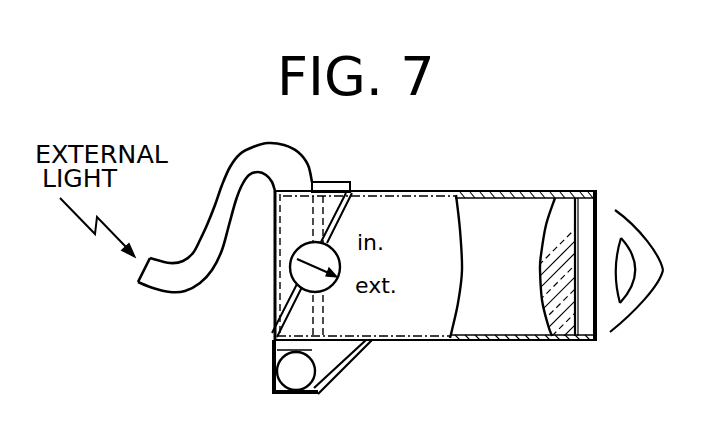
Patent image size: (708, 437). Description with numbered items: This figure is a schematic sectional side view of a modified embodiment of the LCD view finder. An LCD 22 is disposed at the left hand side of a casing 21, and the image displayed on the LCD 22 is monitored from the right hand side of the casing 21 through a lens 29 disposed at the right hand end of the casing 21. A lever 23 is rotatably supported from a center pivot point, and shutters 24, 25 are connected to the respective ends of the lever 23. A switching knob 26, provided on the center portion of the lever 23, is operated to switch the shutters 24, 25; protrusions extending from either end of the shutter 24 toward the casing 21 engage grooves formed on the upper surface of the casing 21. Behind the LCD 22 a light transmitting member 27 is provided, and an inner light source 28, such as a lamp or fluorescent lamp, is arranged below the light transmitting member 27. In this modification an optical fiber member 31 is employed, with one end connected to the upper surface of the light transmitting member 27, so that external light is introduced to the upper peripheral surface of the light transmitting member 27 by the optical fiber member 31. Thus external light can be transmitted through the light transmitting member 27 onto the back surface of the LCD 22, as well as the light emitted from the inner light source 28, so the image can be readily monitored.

The casing 21 is at (488, 192).
The LCD 22 is at (322, 310).
The lever 23 is at (349, 207).
The shutter 24 is at (333, 179).
The shutter 25 is at (312, 345).
The switching knob 26 is at (291, 278).
The light transmitting member 27 is at (283, 235).
The inner light source 28 is at (289, 372).
The lens 29 is at (565, 202).
The optical fiber member 31 is at (248, 159).